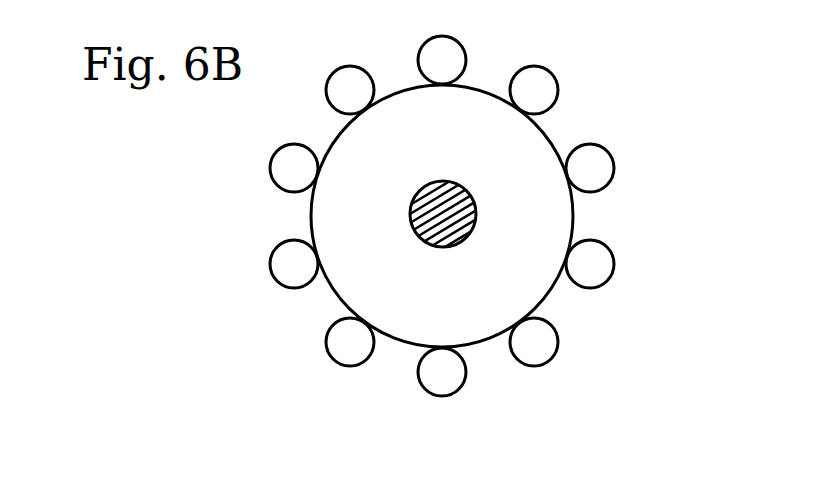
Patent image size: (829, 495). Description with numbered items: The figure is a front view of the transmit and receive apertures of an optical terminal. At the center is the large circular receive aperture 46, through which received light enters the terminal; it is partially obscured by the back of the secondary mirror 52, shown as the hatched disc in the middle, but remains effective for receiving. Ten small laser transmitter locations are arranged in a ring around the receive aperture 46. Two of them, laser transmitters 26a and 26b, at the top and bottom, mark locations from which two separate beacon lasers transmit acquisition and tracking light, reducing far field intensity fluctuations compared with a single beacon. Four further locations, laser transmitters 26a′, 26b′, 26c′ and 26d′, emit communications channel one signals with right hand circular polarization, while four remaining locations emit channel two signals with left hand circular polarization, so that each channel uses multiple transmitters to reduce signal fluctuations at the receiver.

The receive aperture 46 is at (330, 290).
The secondary mirror 52 is at (478, 212).
The laser transmitter 26a is at (464, 46).
The laser transmitter 26a′ is at (553, 78).
The laser transmitter 26b is at (460, 390).
The laser transmitter 26b′ is at (613, 254).
The laser transmitter 26c′ is at (332, 357).
The laser transmitter 26d′ is at (272, 168).